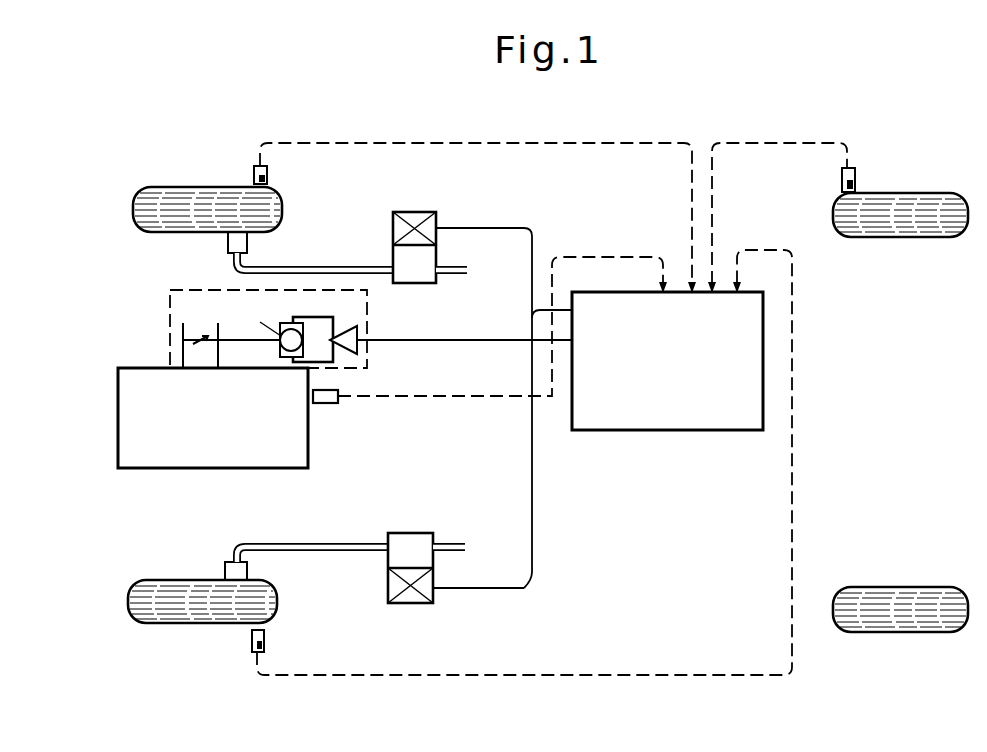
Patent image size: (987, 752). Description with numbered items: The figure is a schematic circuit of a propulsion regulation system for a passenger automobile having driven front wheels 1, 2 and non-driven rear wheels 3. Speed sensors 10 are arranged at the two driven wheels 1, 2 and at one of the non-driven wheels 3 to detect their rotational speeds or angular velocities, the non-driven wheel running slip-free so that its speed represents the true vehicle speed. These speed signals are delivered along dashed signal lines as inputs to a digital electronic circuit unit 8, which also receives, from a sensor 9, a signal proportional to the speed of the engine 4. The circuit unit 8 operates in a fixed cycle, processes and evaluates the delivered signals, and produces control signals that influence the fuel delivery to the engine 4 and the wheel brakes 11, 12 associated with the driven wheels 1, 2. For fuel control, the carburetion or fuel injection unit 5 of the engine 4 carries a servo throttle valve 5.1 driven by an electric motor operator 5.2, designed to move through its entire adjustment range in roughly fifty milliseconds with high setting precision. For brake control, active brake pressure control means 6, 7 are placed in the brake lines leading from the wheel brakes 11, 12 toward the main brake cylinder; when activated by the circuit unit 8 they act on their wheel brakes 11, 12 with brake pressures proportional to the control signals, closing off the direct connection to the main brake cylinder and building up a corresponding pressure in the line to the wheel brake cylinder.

The driven front wheel 1 is at (198, 196).
The driven front wheel 2 is at (182, 612).
The non-driven rear wheel 3 is at (908, 218).
The engine 4 is at (203, 452).
The carburetion or fuel injection unit 5 is at (177, 318).
The servo throttle valve 5.1 is at (190, 341).
The electric motor operator 5.2 is at (303, 333).
The active brake pressure control means 6 is at (410, 220).
The active brake pressure control means 7 is at (407, 597).
The digital electronic circuit unit 8 is at (680, 412).
The sensor 9 is at (330, 407).
The speed sensor 10 is at (262, 163).
The wheel brake 11 is at (236, 243).
The wheel brake 12 is at (227, 568).